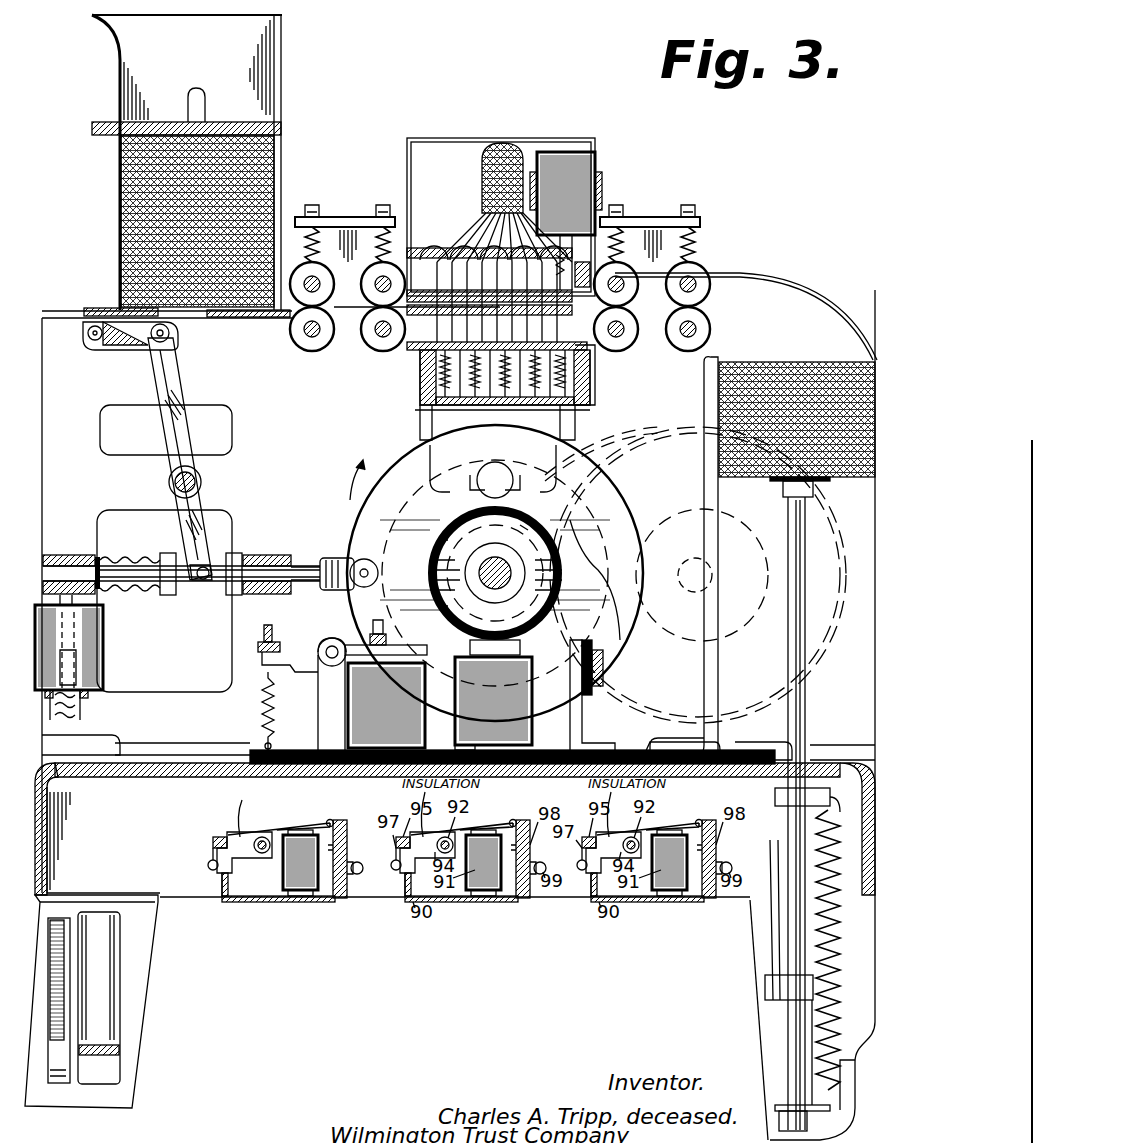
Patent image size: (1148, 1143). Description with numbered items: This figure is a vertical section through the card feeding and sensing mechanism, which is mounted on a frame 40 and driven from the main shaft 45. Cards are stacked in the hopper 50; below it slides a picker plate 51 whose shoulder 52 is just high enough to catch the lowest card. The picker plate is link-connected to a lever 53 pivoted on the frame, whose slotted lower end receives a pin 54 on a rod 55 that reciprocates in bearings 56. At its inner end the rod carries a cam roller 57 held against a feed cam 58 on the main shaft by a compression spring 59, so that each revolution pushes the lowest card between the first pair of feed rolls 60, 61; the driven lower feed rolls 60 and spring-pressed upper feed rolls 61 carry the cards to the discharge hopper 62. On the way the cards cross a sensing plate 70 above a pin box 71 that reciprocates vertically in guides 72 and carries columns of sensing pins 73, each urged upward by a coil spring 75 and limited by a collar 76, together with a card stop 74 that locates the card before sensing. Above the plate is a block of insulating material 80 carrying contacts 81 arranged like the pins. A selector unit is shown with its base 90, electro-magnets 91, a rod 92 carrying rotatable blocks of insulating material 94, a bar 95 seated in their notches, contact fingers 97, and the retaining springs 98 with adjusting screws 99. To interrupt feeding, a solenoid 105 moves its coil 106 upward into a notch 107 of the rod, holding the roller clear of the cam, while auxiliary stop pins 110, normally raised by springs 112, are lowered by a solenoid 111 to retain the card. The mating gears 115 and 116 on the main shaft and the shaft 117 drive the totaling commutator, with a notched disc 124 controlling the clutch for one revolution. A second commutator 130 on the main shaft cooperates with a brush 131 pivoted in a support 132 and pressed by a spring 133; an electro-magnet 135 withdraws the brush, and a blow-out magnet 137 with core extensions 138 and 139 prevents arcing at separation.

The frame 40 is at (42, 492).
The main shaft 45 is at (490, 568).
The hopper 50 is at (272, 108).
The picker plate 51 is at (88, 318).
The shoulder 52 is at (90, 306).
The lever 53 is at (170, 383).
The pin 54 is at (205, 573).
The rod 55 is at (262, 565).
The bearings 56 is at (88, 550).
The cam roller 57 is at (356, 583).
The feed cam 58 is at (398, 530).
The compression spring 59 is at (142, 590).
The lower feed rolls 60 is at (330, 340).
The upper feed rolls 61 is at (383, 284).
The discharge hopper 62 is at (762, 736).
The sensing plate 70 is at (420, 345).
The pin box 71 is at (414, 410).
The guides 72 is at (418, 433).
The sensing pins 73 is at (412, 368).
The card stop 74 is at (630, 340).
The coil spring 75 is at (428, 385).
The collar 76 is at (578, 352).
The block of insulating material 80 is at (433, 262).
The contacts 81 is at (440, 300).
The base 90 is at (281, 865).
The electro-magnets 91 is at (290, 883).
The rod 92 is at (272, 825).
The block of insulating material 94 is at (275, 854).
The bar 95 is at (216, 828).
The contact finger 97 is at (197, 857).
The spring 98 is at (355, 859).
The adjusting screw 99 is at (366, 876).
The solenoid 105 is at (98, 662).
The coil 106 is at (76, 678).
The notch 107 is at (100, 562).
The pins 110 is at (610, 295).
The solenoid 111 is at (580, 168).
The springs 112 is at (617, 255).
The gear 115 is at (522, 520).
The gear 116 is at (655, 440).
The shaft 117 is at (695, 575).
The disc 124 is at (668, 660).
The commutator 130 is at (548, 530).
The brush 131 is at (400, 668).
The support 132 is at (318, 700).
The spring 133 is at (262, 720).
The electro-magnet 135 is at (380, 780).
The blow-out magnet 137 is at (528, 735).
The extension 138 is at (500, 645).
The extension 139 is at (448, 740).